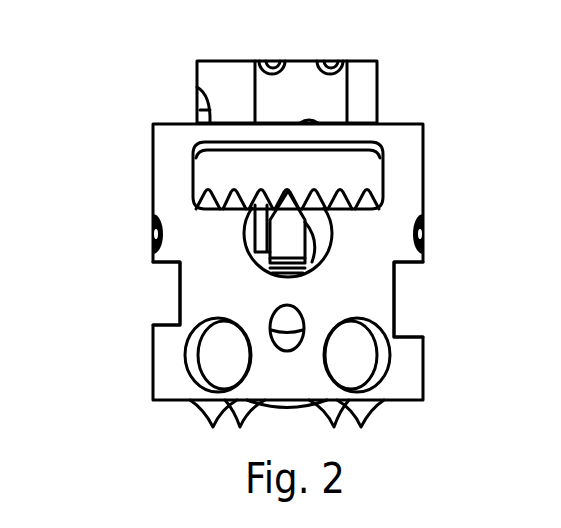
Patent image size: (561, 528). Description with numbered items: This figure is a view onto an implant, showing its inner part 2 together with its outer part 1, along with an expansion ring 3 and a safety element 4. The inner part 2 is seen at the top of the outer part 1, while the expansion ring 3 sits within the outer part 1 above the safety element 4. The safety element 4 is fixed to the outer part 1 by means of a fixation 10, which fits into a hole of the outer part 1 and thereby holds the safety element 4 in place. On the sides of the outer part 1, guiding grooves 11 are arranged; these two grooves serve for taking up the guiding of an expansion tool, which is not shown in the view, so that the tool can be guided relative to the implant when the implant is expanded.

The outer part 1 is at (405, 162).
The inner part 2 is at (364, 88).
The expansion ring 3 is at (212, 172).
The safety element 4 is at (288, 225).
The fixation of safety element 10 is at (288, 317).
The guiding groove 11 is at (170, 298).